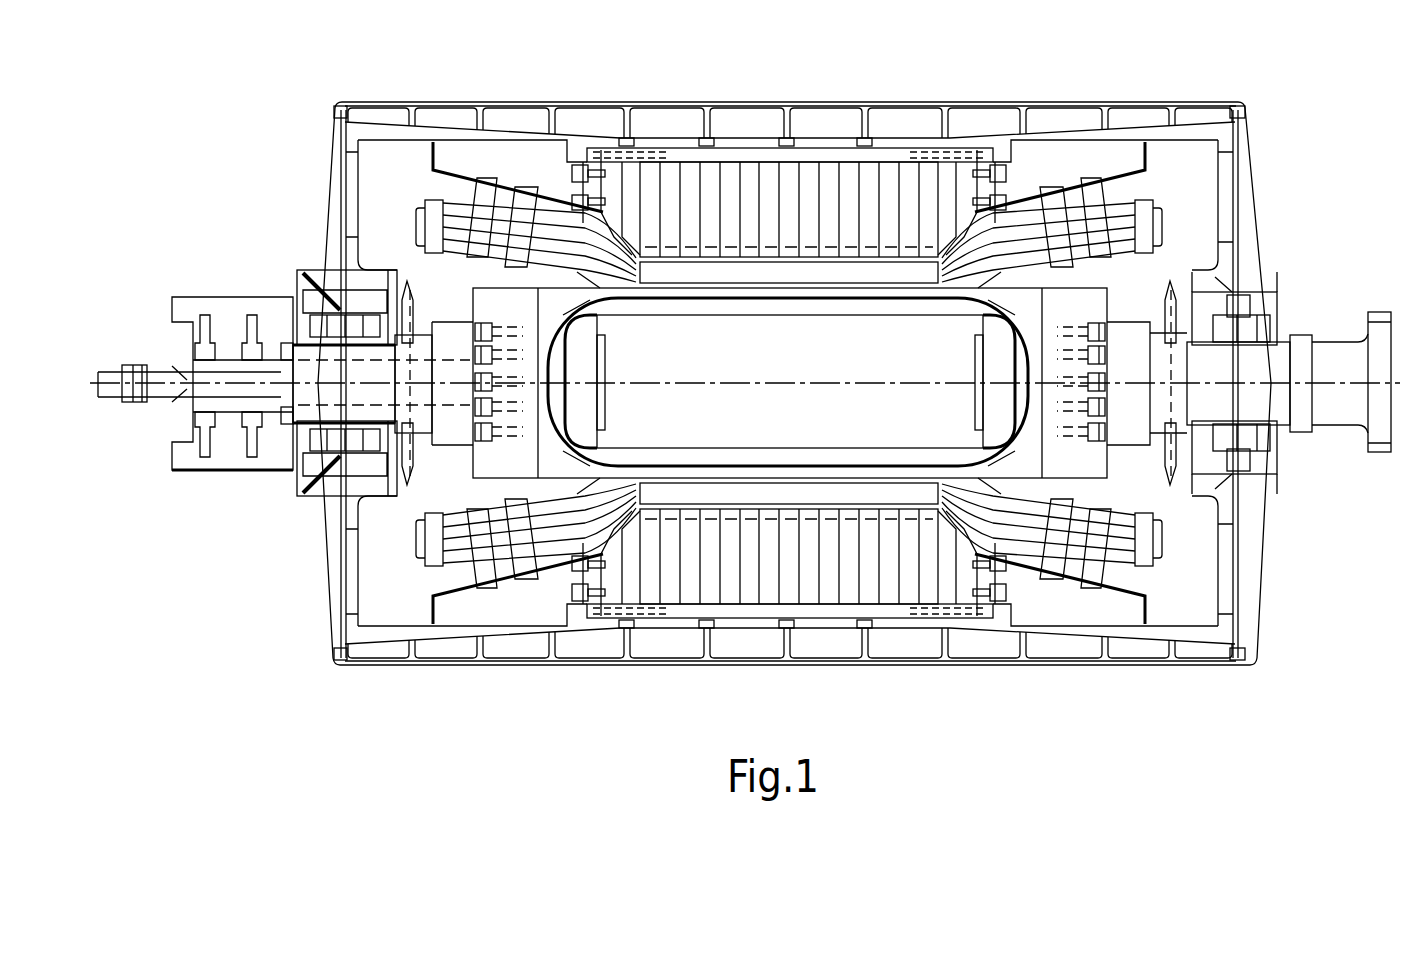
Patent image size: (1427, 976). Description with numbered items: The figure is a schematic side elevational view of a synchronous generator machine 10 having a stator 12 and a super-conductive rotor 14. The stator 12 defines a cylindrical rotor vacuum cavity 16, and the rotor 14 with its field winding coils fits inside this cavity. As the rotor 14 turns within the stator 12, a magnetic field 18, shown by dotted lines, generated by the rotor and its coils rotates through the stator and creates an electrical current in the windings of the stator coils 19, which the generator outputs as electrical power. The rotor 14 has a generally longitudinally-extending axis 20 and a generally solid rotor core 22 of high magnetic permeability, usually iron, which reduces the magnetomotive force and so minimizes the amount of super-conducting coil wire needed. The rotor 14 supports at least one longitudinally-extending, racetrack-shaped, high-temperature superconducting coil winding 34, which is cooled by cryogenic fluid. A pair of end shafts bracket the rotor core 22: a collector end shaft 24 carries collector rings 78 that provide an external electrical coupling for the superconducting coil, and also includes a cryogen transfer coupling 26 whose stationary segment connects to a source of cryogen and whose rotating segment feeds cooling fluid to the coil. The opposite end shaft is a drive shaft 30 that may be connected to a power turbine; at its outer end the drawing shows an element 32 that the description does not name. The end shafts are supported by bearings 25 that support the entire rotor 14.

The synchronous generator machine 10 is at (518, 25).
The stator 12 is at (687, 189).
The rotor 14 is at (457, 447).
The cylindrical rotor vacuum cavity 16 is at (452, 274).
The magnetic field 18 is at (890, 235).
The stator coils 19 is at (435, 568).
The longitudinally-extending axis 20 is at (305, 378).
The rotor core 22 is at (750, 413).
The collector end shaft 24 is at (372, 367).
The bearings 25 is at (370, 487).
The cryogen transfer coupling 26 is at (145, 360).
The drive shaft 30 is at (1262, 360).
The coupling flange 32 is at (1385, 450).
The high-temperature superconducting coil winding 34 is at (1022, 306).
The collector rings 78 is at (238, 458).